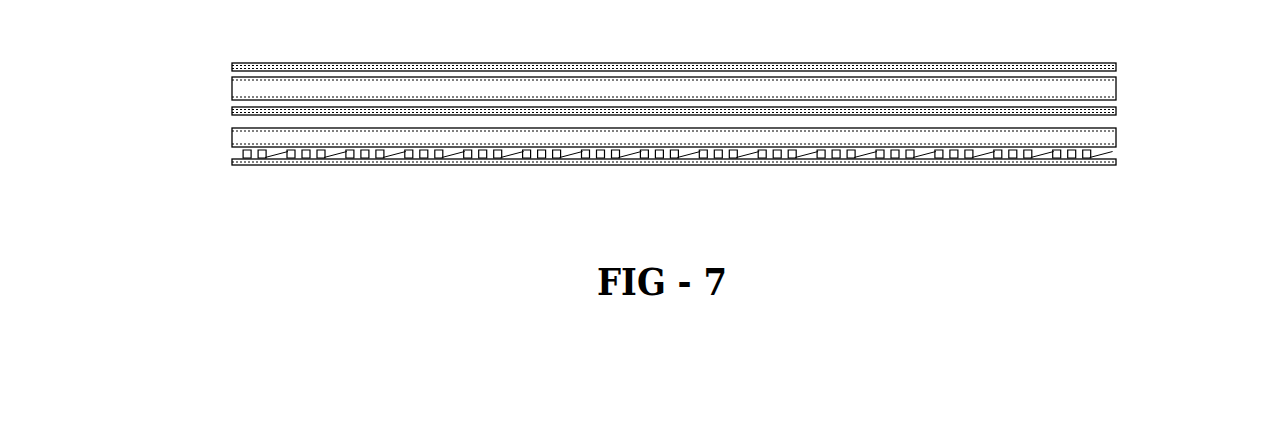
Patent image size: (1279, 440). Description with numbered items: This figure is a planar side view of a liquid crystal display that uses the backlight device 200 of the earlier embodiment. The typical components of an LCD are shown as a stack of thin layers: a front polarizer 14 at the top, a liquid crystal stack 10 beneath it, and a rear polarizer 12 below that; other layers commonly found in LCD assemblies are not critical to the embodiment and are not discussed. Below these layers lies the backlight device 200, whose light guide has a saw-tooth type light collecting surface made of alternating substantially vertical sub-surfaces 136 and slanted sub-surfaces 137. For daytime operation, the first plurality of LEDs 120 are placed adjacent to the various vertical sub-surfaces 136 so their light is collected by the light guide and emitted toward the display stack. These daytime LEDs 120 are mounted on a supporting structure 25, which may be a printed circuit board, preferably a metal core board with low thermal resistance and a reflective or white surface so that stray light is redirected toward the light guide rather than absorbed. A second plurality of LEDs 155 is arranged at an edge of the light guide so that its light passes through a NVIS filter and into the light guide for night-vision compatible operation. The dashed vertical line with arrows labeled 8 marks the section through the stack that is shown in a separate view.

The backlight device 200 is at (652, 126).
The front polarizer 14 is at (1050, 68).
The liquid crystal stack 10 is at (1050, 93).
The rear polarizer 12 is at (1050, 109).
The supporting structure 25 is at (803, 162).
The first plurality of LEDs 120 is at (287, 163).
The slanted sub-surfaces 137 is at (455, 153).
The substantially vertical sub-surfaces 136 is at (651, 156).
The second plurality of LEDs 155 is at (290, 150).
The section line 8- 8 is at (363, 197).